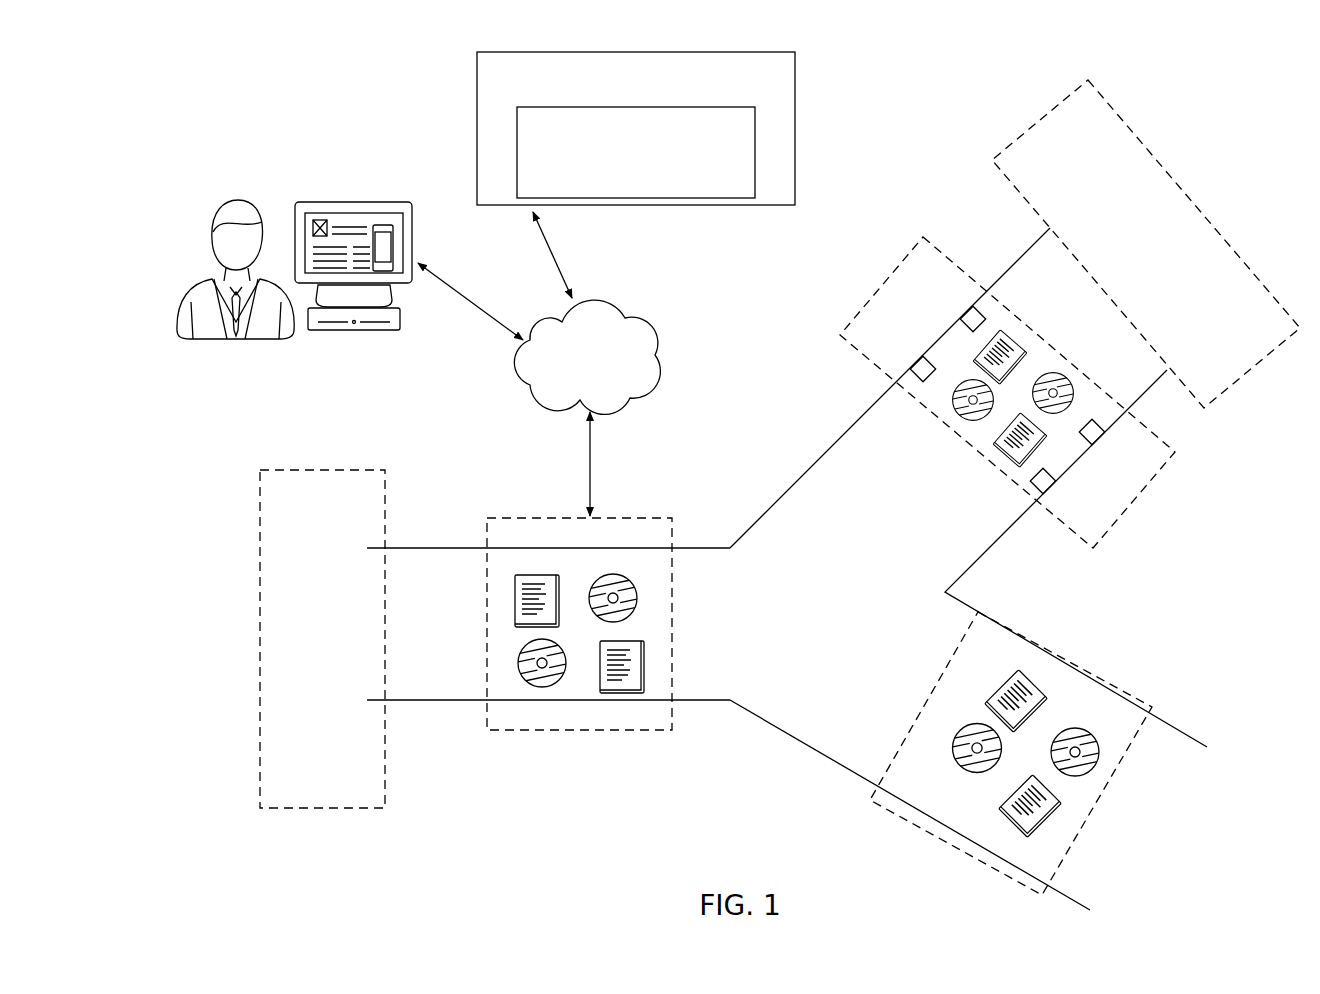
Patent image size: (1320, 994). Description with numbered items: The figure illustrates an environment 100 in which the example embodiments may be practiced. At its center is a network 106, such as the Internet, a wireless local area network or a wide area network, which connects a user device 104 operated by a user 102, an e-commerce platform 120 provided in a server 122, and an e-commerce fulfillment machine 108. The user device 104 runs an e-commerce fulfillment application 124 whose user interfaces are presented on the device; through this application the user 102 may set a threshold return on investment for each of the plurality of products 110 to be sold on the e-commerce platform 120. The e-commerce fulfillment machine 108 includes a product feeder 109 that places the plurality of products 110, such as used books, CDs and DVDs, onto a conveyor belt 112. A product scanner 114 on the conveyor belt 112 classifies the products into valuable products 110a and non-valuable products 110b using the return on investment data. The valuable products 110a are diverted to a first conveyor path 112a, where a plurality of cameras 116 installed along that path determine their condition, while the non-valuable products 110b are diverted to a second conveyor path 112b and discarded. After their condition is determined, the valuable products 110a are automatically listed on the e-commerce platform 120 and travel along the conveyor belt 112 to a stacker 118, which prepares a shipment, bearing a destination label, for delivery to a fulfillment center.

The environment 100 is at (1243, 842).
The user 102 is at (198, 278).
The user device 104 is at (360, 202).
The network 106 is at (574, 394).
The e-commerce fulfillment machine 108 is at (462, 703).
The product feeder 109 is at (262, 700).
The plurality of products 110 is at (578, 690).
The valuable products 110a is at (1068, 402).
The non-valuable products 110b is at (974, 780).
The conveyor belt 112 is at (802, 748).
The first conveyor path 112a is at (1143, 495).
The second conveyor path 112b is at (907, 823).
The product scanner 114 is at (580, 732).
The plurality of cameras 116 is at (968, 308).
The stacker 118 is at (1088, 80).
The e-commerce platform 120 is at (622, 189).
The server 122 is at (697, 90).
The e-commerce fulfillment application 124 is at (368, 222).